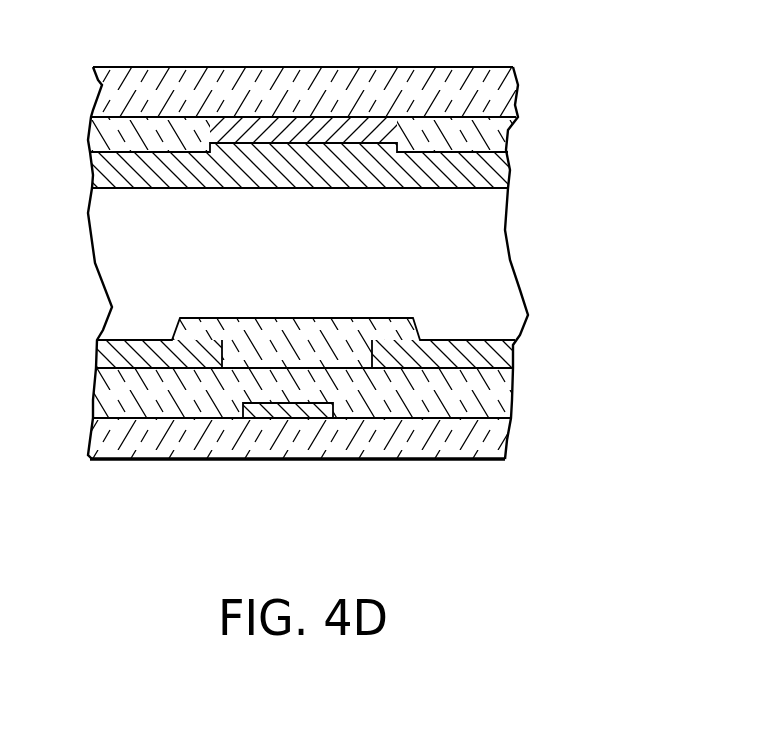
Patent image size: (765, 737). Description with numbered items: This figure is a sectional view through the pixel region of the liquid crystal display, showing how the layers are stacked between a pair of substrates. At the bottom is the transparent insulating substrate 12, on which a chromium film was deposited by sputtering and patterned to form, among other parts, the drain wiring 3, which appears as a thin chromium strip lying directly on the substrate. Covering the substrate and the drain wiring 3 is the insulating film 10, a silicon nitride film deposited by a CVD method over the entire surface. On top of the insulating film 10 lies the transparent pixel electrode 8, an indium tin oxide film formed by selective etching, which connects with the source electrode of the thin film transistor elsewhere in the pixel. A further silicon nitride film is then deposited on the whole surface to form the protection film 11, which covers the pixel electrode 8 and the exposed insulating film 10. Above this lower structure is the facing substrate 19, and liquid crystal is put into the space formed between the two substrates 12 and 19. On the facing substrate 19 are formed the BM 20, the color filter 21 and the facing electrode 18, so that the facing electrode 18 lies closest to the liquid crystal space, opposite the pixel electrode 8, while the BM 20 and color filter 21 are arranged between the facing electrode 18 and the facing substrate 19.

The facing substrate 19 is at (265, 95).
The BM 20 is at (320, 133).
The color filter 21 is at (485, 137).
The facing electrode 18 is at (467, 173).
The protection film 11 is at (407, 328).
The transparent pixel electrode 8 is at (500, 353).
The insulating film 10 is at (497, 398).
The transparent insulating substrate 12 is at (477, 442).
The drain wiring 3 is at (307, 415).